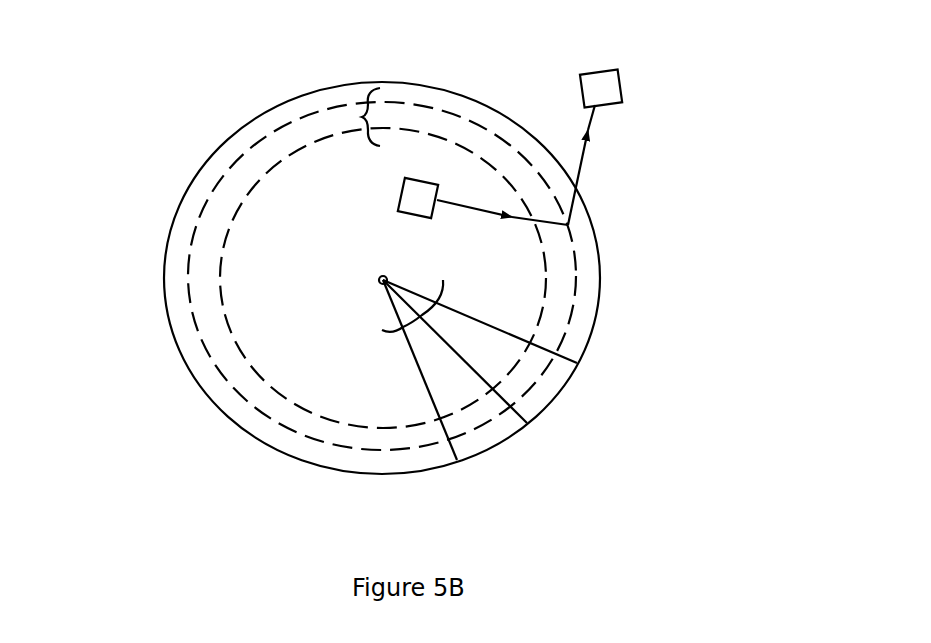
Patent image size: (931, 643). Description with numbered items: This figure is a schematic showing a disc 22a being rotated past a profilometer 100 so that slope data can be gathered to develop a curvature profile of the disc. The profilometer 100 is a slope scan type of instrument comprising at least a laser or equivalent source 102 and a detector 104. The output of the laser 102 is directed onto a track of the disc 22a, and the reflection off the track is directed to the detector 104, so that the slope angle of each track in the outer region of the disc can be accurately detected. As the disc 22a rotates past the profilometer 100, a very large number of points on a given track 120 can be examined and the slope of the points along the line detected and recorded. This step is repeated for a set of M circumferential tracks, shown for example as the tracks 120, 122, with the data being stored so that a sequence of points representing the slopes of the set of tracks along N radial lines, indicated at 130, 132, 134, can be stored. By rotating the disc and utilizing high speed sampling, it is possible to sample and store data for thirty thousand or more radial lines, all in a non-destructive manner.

The optical disc 22a is at (172, 225).
The profilometer 100 is at (603, 165).
The laser source 102 is at (400, 197).
The detector 104 is at (622, 98).
The track 120 is at (472, 122).
The circumferential track 122 is at (410, 128).
The radial line 130 is at (437, 405).
The radial line 132 is at (502, 398).
The radial line 134 is at (545, 366).
The number of circumferential tracks M is at (360, 104).
The number of radial lines N is at (410, 320).